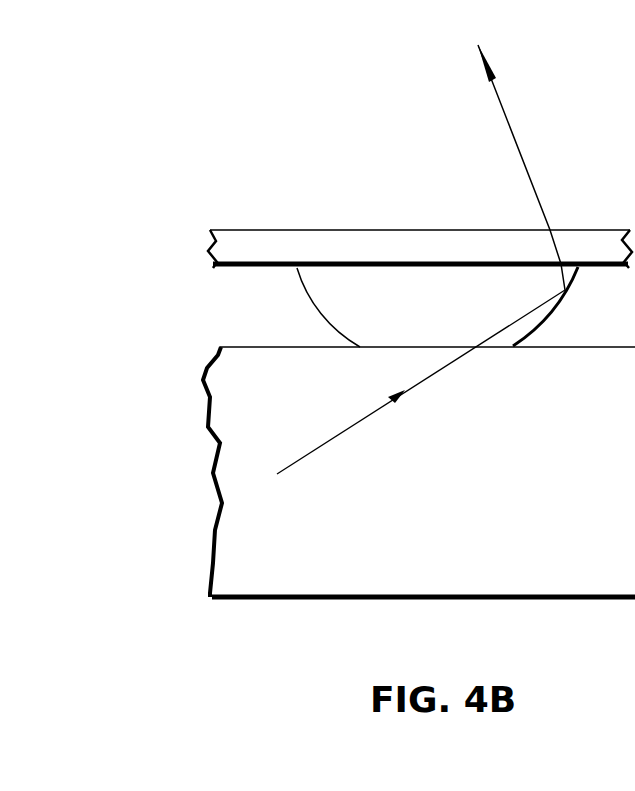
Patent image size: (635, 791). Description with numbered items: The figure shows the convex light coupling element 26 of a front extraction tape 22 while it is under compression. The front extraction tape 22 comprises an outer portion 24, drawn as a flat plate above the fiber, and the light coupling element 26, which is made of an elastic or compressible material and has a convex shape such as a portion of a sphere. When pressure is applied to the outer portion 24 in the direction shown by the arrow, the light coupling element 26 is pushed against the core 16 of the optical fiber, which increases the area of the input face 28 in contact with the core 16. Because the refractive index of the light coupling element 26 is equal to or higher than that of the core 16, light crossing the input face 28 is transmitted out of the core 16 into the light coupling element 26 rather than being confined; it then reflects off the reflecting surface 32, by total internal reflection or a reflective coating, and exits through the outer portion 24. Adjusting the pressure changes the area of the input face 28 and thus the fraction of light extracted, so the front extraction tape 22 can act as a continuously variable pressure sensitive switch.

The core 16 is at (274, 578).
The front extraction tape 22 is at (303, 219).
The outer portion 24 is at (225, 266).
The light coupling element 26 is at (318, 311).
The input face 28 is at (407, 346).
The reflecting surface 32 is at (566, 294).